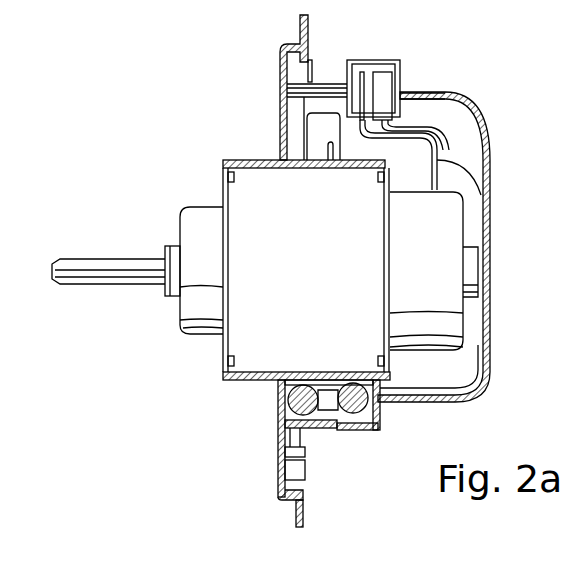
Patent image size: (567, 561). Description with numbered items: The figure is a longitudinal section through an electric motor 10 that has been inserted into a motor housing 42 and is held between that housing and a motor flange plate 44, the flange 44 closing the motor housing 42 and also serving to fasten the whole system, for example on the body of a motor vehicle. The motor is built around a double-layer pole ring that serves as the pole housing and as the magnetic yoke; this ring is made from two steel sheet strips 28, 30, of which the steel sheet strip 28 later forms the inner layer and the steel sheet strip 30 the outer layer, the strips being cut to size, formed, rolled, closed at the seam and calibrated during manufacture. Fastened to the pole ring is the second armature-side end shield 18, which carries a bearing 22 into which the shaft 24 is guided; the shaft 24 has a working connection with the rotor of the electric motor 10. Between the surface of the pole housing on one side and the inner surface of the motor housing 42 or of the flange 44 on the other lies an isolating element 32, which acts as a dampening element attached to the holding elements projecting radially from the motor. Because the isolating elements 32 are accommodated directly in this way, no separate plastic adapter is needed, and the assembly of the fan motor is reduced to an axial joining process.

The electric motor 10 is at (170, 128).
The motor flange plate 44 is at (295, 66).
The motor housing 42 is at (470, 104).
The shaft 24 is at (93, 262).
The bearing 22 is at (173, 298).
The second armature-side end shield 18 is at (200, 326).
The steel sheet strip 28 is at (322, 284).
The steel sheet strip 30 is at (246, 383).
The isolating element 32 is at (314, 421).